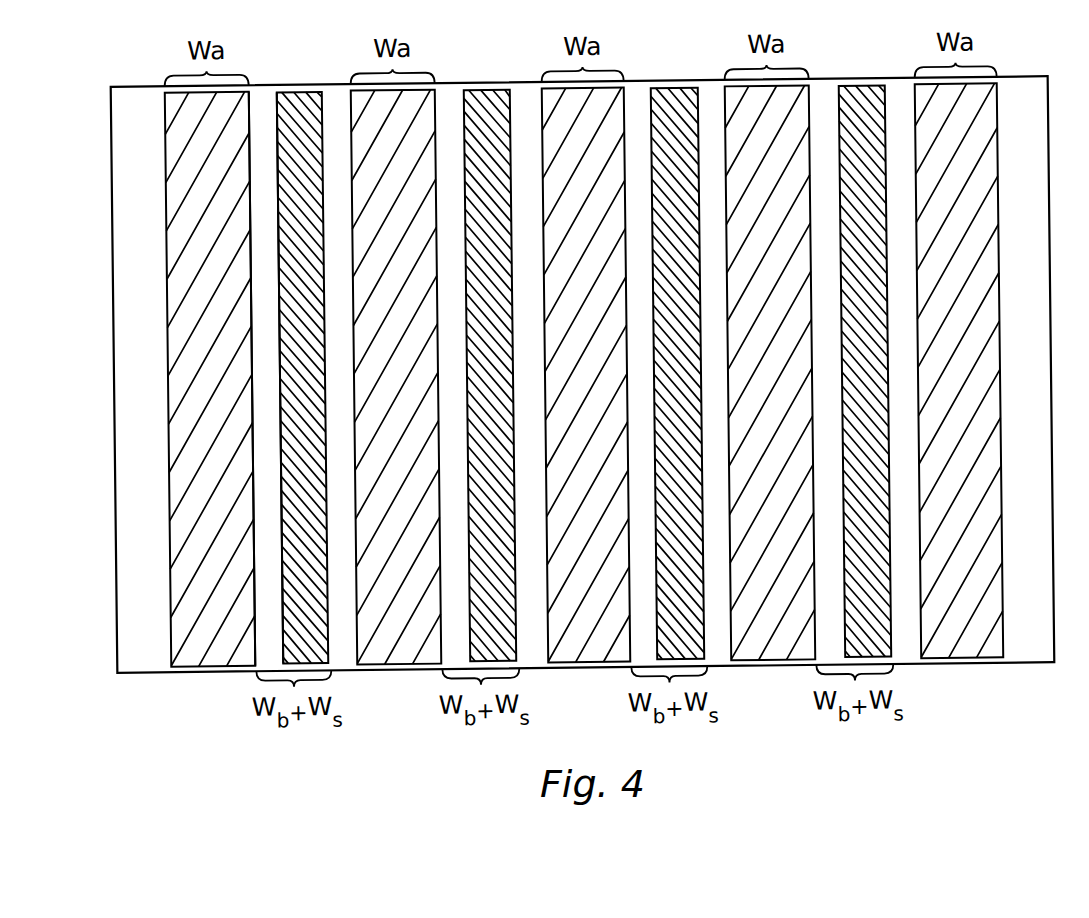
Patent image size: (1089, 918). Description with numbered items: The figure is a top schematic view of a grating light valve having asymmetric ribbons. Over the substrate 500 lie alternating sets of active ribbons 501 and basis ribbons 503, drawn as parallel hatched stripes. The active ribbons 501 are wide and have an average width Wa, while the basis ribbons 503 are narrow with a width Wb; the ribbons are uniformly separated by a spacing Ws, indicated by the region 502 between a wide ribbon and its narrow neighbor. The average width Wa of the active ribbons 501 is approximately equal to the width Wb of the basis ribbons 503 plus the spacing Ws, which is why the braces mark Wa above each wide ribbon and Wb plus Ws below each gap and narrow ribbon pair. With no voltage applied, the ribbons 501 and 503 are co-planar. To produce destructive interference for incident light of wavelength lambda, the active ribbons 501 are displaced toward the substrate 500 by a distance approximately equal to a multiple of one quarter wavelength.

The substrate 500 is at (119, 113).
The active ribbons 501 is at (170, 406).
The spacing between electrode stripes (Wb) 502 is at (263, 327).
The basis ribbons 503 is at (300, 556).